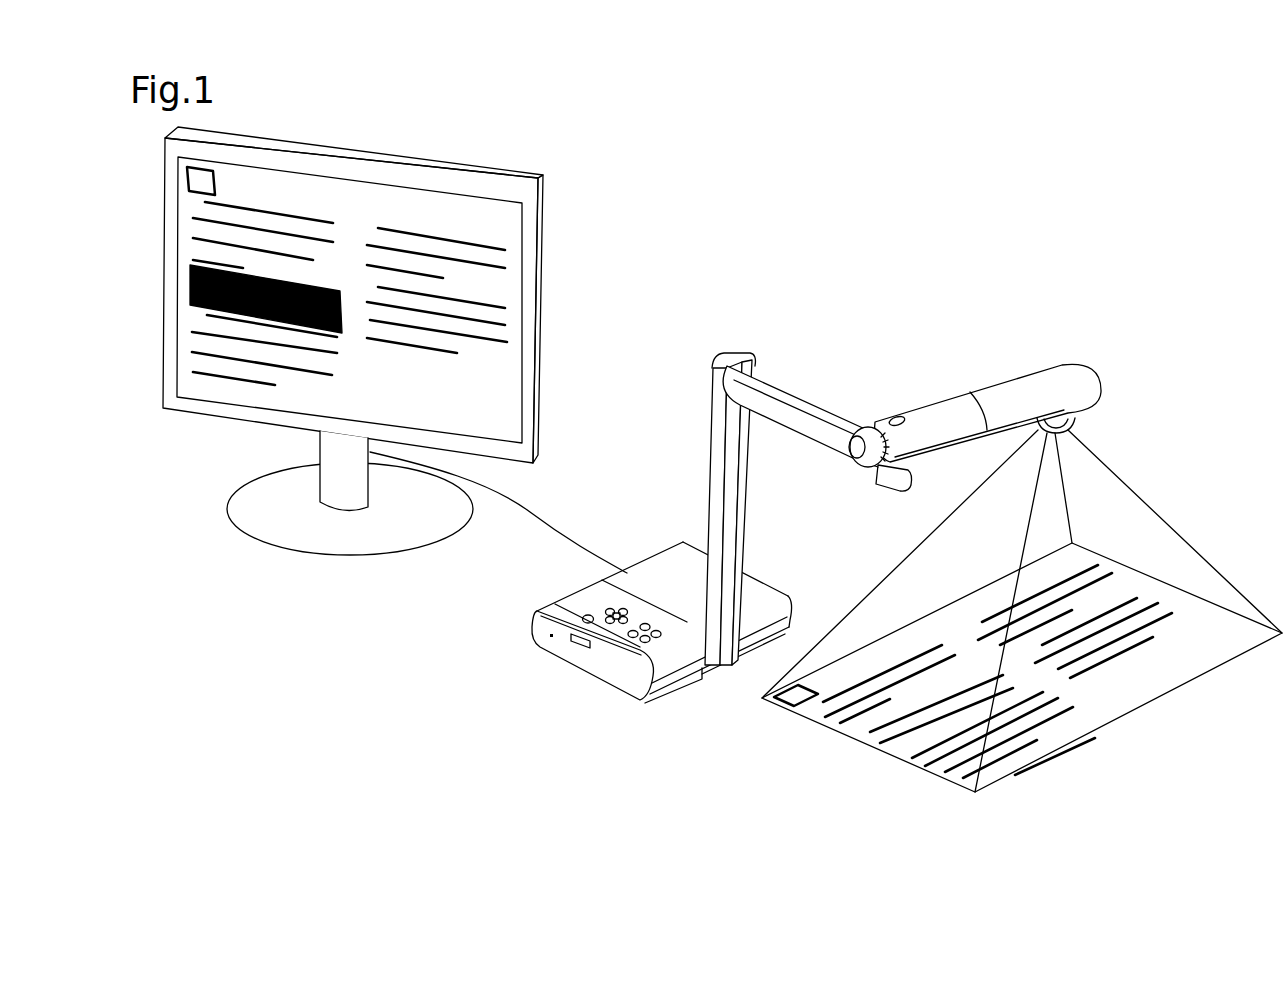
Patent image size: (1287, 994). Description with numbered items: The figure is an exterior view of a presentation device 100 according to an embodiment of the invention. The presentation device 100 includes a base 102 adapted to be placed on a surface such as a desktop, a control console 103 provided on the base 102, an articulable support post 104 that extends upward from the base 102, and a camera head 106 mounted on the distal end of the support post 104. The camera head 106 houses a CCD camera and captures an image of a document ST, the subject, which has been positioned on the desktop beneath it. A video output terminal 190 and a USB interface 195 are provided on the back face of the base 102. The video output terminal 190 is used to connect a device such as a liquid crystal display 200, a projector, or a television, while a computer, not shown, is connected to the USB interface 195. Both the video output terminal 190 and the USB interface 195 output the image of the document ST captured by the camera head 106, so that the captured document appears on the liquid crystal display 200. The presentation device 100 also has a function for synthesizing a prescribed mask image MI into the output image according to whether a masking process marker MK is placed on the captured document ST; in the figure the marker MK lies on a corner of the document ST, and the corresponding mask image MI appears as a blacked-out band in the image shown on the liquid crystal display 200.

The liquid crystal display 200 is at (395, 158).
The mask image MI is at (190, 286).
The presentation device 100 is at (886, 522).
The base 102 is at (641, 582).
The control console 103 is at (590, 607).
The articulable support post 104 is at (708, 412).
The camera head 106 is at (1072, 372).
The video output terminal 190 is at (628, 550).
The USB interface 195 is at (592, 574).
The masking process marker MK is at (772, 703).
The document ST is at (833, 732).